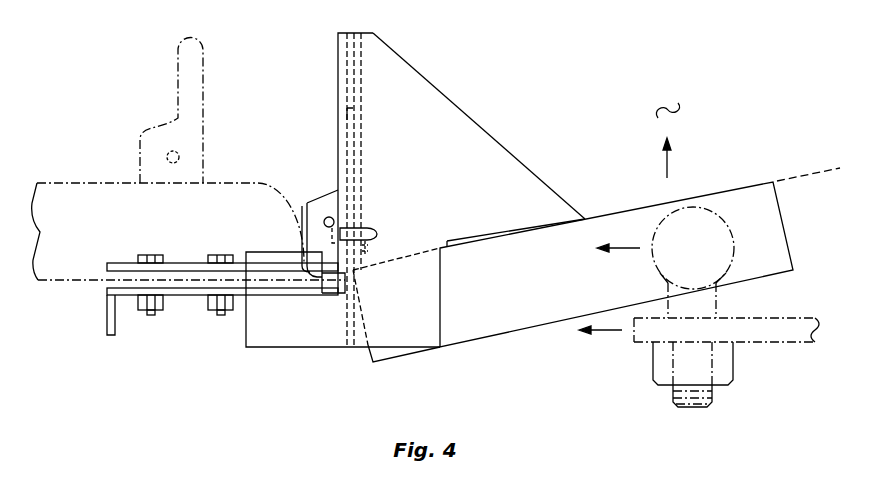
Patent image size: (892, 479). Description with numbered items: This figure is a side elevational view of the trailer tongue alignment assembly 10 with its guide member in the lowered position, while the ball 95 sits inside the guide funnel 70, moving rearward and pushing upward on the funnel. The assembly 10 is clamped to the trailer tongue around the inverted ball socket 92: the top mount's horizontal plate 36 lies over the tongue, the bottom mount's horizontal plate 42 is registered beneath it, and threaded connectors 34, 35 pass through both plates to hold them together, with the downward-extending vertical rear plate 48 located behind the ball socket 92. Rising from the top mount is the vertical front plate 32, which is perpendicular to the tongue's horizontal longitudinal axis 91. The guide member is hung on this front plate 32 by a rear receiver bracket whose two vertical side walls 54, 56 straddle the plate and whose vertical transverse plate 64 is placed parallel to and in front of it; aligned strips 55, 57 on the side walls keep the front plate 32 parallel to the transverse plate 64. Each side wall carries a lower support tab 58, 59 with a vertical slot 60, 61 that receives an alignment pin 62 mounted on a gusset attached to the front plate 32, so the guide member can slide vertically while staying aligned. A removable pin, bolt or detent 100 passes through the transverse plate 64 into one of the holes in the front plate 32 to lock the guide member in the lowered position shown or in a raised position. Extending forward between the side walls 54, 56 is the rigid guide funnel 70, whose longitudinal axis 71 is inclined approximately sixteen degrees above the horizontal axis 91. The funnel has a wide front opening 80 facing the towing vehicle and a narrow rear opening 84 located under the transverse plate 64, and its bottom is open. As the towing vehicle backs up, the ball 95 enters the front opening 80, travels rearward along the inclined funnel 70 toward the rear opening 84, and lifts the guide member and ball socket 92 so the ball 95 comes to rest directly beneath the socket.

The trailer tongue alignment assembly 10 is at (560, 55).
The vertical front plate 32 is at (348, 50).
The threaded connector 34 is at (160, 303).
The threaded connector 35 is at (148, 258).
The horizontal plate 36 is at (118, 266).
The horizontal plate 42 is at (118, 289).
The vertical rear plate 48 is at (113, 326).
The vertical side wall 54 is at (479, 126).
The vertical side wall 56 is at (463, 110).
The aligned strip 55 is at (299, 105).
The aligned strip 57 is at (340, 112).
The lower support tab 58 is at (307, 321).
The lower support tab 59 is at (275, 350).
The vertical slot 60 is at (386, 285).
The vertical slot 61 is at (343, 281).
The alignment pin 62 is at (326, 218).
The vertical transverse plate 64 is at (356, 127).
The guide funnel 70 is at (738, 189).
The longitudinal axis 71 is at (813, 170).
The wide front opening 80 is at (765, 230).
The narrow rear opening 84 is at (368, 356).
The longitudinal axis 91 is at (512, 247).
The inverted ball socket 92 is at (238, 183).
The ball 95 is at (660, 273).
The removable pin, bolt or detent 100 is at (368, 229).